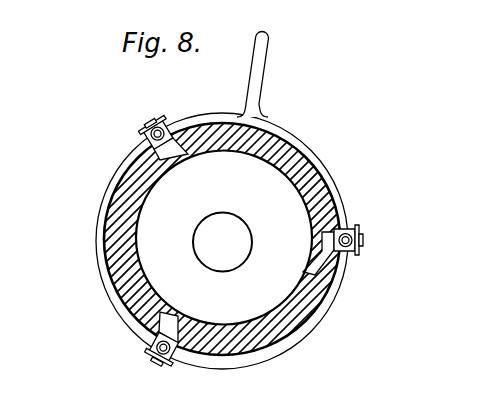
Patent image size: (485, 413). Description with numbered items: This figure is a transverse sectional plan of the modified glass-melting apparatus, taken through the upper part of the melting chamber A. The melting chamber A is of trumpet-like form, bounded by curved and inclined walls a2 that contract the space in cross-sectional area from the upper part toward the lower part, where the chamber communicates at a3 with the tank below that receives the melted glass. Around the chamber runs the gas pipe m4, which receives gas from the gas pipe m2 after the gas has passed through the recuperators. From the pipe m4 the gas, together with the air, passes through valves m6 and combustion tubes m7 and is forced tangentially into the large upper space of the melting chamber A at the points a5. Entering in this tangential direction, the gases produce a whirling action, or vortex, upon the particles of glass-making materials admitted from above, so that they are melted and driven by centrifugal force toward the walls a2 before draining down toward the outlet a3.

The gas pipe m2 is at (270, 60).
The gas pipe m4 is at (97, 247).
The valve m6 is at (152, 124).
The combustion tube m7 is at (160, 149).
The curved and inclined wall a2 is at (222, 239).
The outlet a3 is at (222, 242).
The tangential inlet a5 is at (180, 158).
The melting chamber A is at (224, 238).